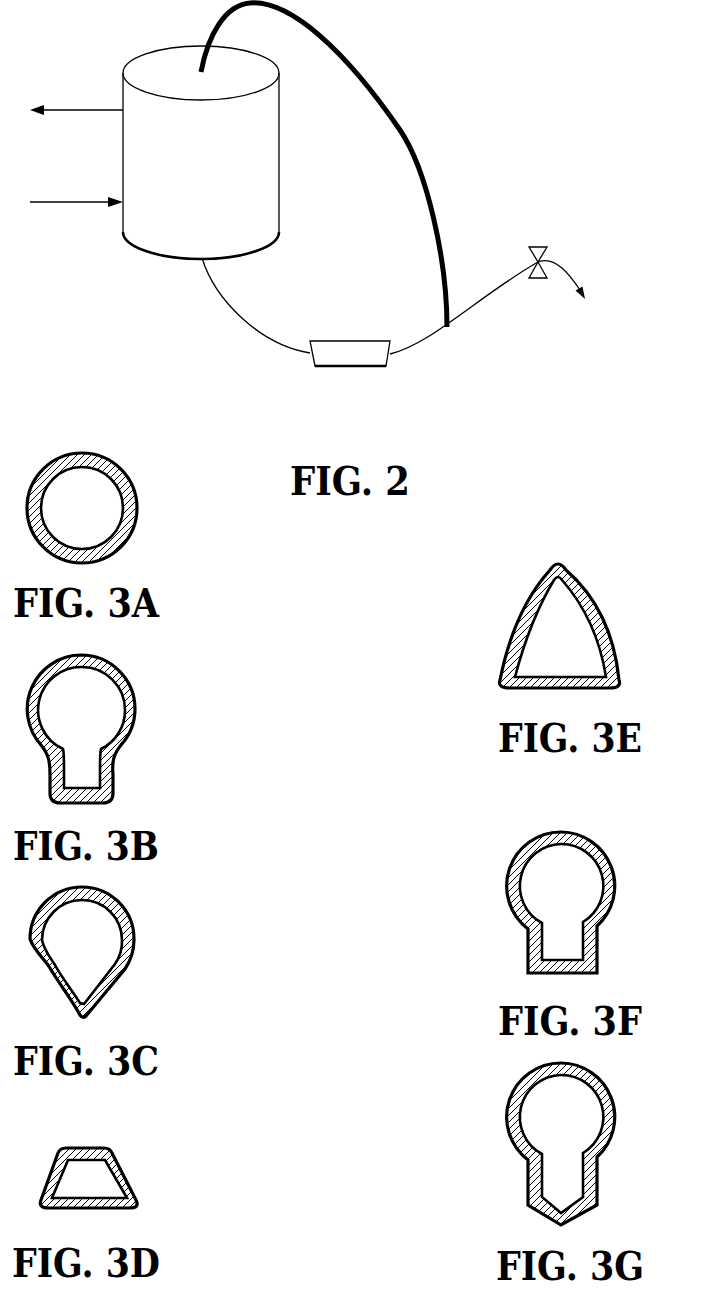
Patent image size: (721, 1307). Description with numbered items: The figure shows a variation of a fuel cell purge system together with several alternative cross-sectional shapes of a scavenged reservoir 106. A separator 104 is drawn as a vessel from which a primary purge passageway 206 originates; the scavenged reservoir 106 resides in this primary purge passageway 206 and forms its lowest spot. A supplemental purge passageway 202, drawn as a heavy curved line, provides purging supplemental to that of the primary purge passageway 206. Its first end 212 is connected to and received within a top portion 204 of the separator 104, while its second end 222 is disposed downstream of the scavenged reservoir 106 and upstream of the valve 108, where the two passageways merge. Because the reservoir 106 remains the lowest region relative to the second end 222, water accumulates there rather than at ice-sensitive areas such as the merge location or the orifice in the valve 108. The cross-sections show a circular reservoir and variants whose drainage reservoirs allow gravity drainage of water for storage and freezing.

The separator 104 is at (183, 178).
The top portion of the separator 204 is at (180, 62).
The first end of the supplemental purge passageway 212 is at (202, 70).
The supplemental purge passageway 202 is at (402, 133).
The primary purge passageway 206 is at (240, 316).
The scavenged reservoir 106 is at (340, 378).
The second end of the supplemental purge passageway 222 is at (458, 343).
The valve 108 is at (539, 246).